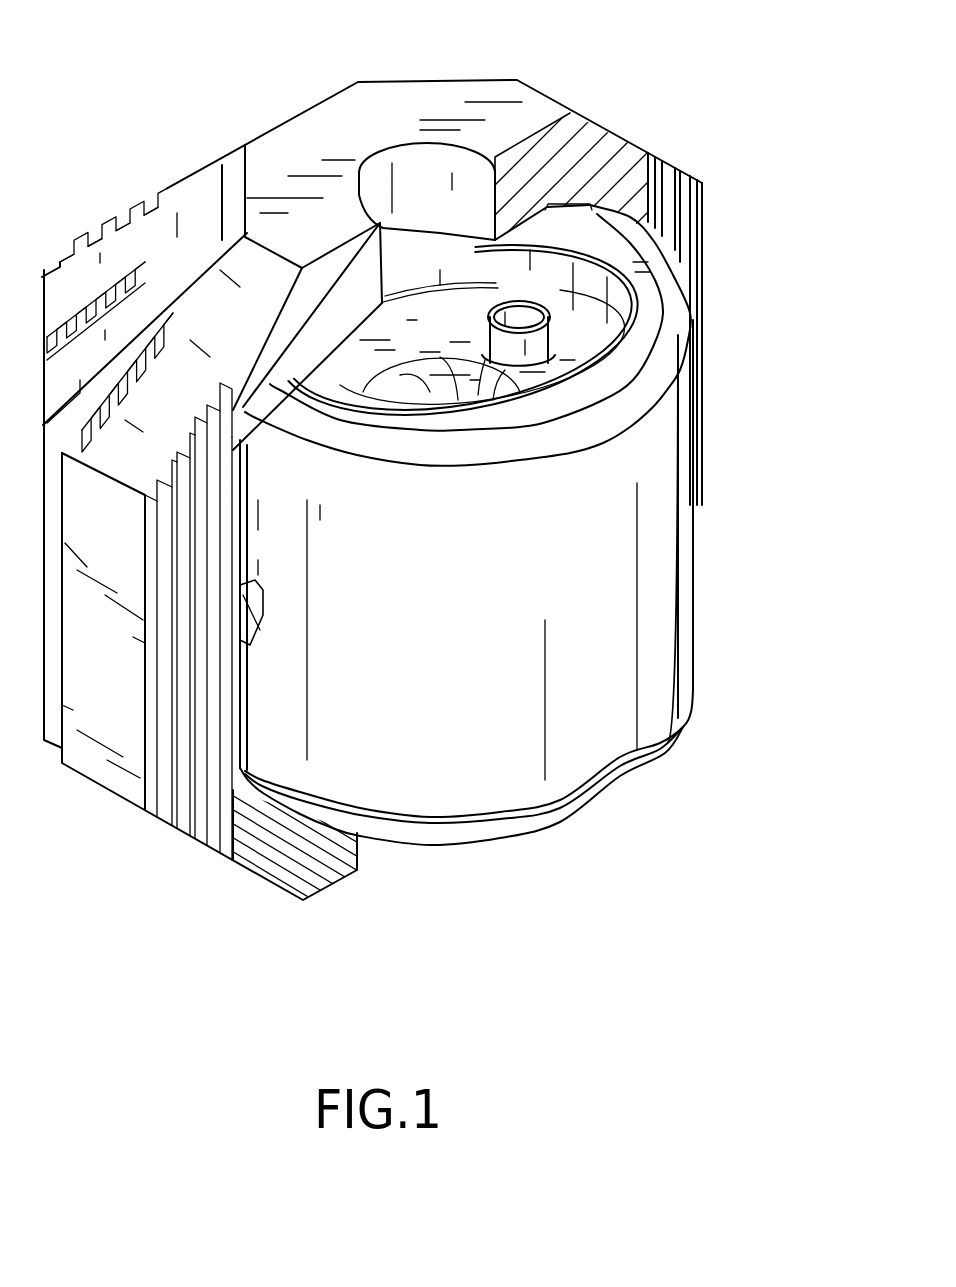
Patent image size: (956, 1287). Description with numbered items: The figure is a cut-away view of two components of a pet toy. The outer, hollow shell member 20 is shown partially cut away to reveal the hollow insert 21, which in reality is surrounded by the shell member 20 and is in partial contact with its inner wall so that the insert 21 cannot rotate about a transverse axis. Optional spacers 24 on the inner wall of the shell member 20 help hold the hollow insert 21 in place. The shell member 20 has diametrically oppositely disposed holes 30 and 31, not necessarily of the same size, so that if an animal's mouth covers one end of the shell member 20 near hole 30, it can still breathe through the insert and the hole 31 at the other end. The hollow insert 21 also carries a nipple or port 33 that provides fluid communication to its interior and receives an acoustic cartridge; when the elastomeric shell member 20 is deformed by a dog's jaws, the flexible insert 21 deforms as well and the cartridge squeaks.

The outer hollow shell member 20 is at (600, 150).
The hollow insert 21 is at (683, 575).
The spacers 24 is at (253, 608).
The hole 30 is at (410, 172).
The hole 31 is at (385, 850).
The nipple or port 33 is at (520, 315).